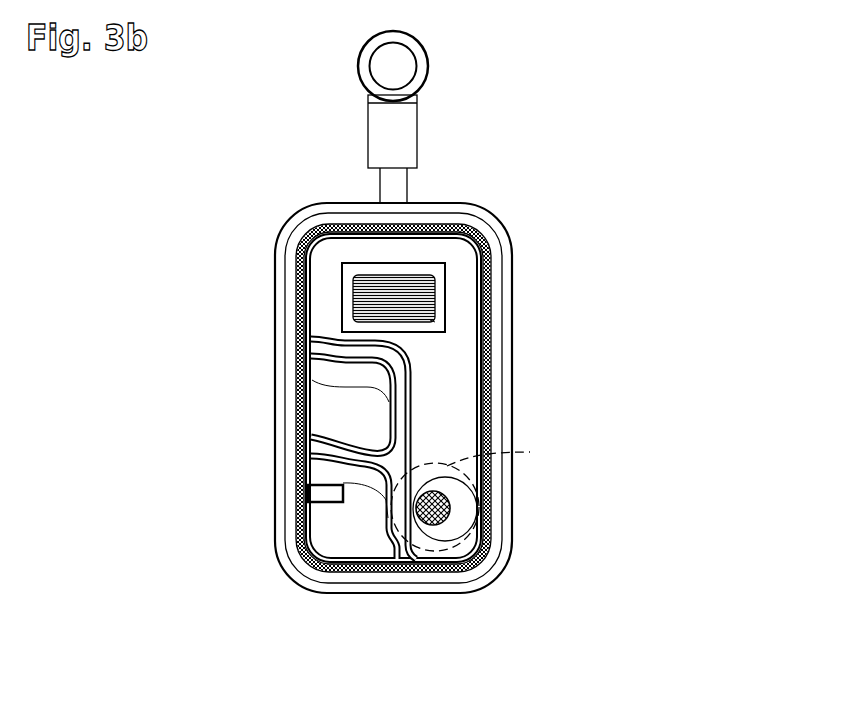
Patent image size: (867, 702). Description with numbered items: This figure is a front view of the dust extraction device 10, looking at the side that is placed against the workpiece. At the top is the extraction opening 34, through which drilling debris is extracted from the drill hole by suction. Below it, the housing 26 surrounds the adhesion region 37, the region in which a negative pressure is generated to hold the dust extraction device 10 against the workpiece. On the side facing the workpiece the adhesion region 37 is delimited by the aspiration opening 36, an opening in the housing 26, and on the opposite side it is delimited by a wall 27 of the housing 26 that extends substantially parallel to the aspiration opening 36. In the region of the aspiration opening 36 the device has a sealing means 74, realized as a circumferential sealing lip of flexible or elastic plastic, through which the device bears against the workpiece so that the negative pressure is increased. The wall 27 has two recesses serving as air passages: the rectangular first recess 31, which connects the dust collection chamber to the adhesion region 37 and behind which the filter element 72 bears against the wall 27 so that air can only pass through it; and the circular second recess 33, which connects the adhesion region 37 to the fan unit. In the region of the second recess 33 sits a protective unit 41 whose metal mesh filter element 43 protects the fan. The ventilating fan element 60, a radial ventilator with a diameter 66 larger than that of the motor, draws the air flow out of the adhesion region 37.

The dust extraction device 10 is at (660, 84).
The housing 26 is at (538, 224).
The wall 27 is at (443, 405).
The first recess 31 is at (444, 325).
The second recess 33 is at (441, 572).
The extraction opening 34 is at (408, 72).
The aspiration opening 36 is at (305, 331).
The adhesion region 37 is at (330, 289).
The protective unit 41 is at (452, 535).
The filter element 43 is at (472, 479).
The ventilating fan element 60 is at (466, 521).
The diameter 66 is at (530, 452).
The filter element 72 is at (441, 281).
The sealing means 74 is at (284, 412).